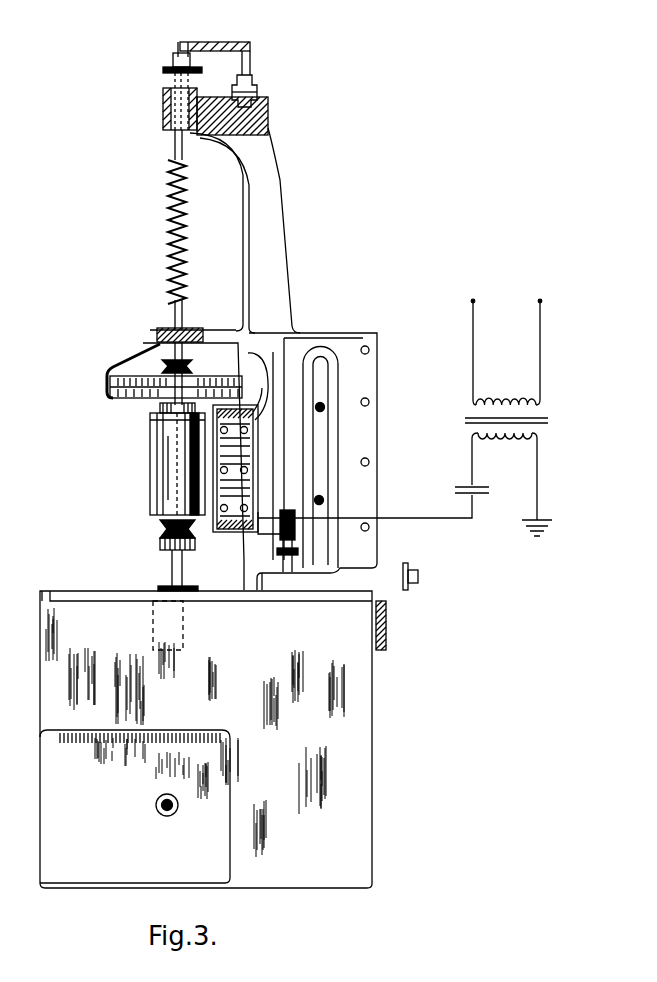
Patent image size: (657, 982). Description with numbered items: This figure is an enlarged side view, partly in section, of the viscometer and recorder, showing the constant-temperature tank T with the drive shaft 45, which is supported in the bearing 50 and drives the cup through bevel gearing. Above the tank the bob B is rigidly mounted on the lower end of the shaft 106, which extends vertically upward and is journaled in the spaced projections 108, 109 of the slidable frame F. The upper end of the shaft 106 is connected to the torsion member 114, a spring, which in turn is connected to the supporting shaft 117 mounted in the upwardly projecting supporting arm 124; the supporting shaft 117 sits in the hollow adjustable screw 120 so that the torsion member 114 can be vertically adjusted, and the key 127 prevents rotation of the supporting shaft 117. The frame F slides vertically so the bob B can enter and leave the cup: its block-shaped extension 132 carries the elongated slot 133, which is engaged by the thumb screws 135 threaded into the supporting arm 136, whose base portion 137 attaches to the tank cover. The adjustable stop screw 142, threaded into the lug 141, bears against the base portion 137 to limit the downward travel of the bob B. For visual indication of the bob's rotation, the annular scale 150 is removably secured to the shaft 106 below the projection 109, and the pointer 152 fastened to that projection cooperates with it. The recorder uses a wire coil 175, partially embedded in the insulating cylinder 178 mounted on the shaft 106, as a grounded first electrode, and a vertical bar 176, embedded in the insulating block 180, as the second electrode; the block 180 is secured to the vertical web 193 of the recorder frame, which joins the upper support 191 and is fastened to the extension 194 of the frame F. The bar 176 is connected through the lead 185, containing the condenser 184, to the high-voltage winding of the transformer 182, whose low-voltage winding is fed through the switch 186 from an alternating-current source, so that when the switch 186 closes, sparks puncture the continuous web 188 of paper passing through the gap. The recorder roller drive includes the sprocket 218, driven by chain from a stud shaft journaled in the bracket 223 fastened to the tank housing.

The key 127 is at (224, 40).
The hollow adjustable screw 120 is at (168, 87).
The supporting shaft 117 is at (184, 136).
The slidable frame F is at (294, 187).
The torsion member 114 is at (172, 229).
The upwardly projecting supporting arm 124 is at (283, 241).
The projection 109 is at (213, 327).
The pointer 152 is at (130, 366).
The annular scale 150 is at (114, 395).
The extension 194 is at (244, 379).
The upper support 191 is at (247, 386).
The vertical bar 176 is at (150, 420).
The wire coil 175 is at (170, 443).
The insulating cylinder 178 is at (150, 492).
The continuous web or sheet 188 is at (163, 533).
The projection 108 is at (162, 545).
The shaft 106 is at (172, 577).
The insulating block 180 is at (256, 522).
The vertical web 193 is at (241, 472).
The lug 141 is at (283, 546).
The adjustable stop screw 142 is at (257, 583).
The base portion 137 is at (311, 584).
The upwardly projecting supporting arm 136 is at (323, 377).
The block-shaped extension 132 is at (358, 375).
The thumb screws 135 is at (324, 409).
The lead 185 is at (391, 518).
The slot 133 is at (317, 543).
The sprocket 218 is at (419, 574).
The bracket 223 is at (387, 642).
The switch 186 is at (474, 362).
The transformer 182 is at (540, 422).
The condenser 184 is at (478, 486).
The constant-temperature tank T is at (384, 727).
The bob B is at (183, 627).
The drive shaft 45 is at (160, 814).
The bearing 50 is at (178, 809).